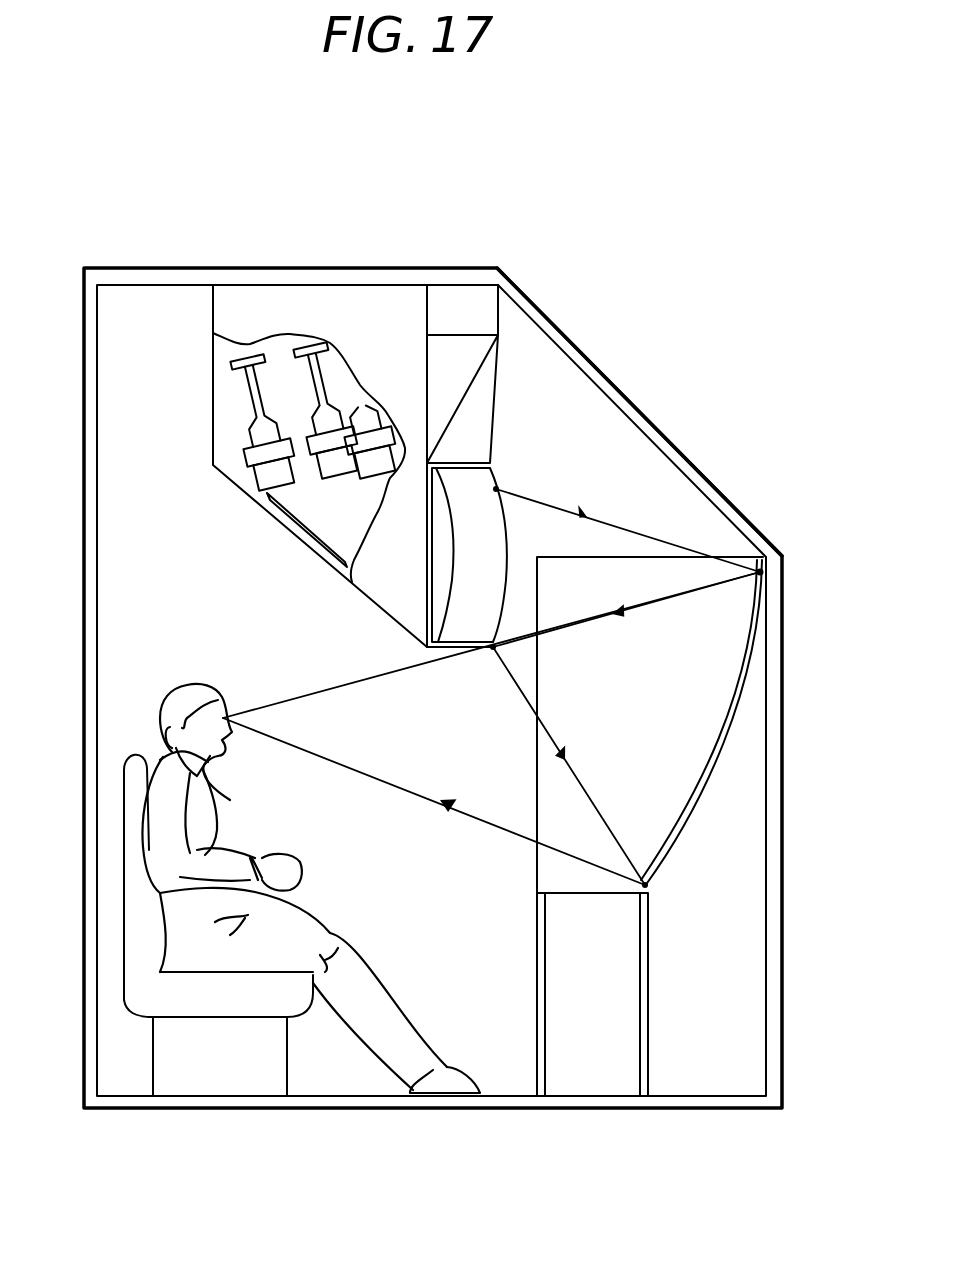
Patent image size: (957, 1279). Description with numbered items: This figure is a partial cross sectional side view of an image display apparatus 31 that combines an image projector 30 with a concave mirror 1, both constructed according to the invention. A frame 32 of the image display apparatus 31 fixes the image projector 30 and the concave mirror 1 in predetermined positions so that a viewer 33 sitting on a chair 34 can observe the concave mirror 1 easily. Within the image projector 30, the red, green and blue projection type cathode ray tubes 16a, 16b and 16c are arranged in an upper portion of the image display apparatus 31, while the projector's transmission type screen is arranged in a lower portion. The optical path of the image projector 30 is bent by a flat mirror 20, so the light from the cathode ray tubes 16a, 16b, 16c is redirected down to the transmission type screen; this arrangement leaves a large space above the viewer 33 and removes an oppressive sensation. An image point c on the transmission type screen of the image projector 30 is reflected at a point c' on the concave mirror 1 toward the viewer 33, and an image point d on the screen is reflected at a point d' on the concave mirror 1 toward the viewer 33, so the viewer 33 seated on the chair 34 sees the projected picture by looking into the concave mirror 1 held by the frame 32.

The concave mirror 1 is at (693, 835).
The red projection type cathode ray tube 16a is at (373, 412).
The green projection type cathode ray tube 16b is at (318, 420).
The blue projection type cathode ray tube 16c is at (260, 440).
The flat mirror 20 is at (287, 515).
The image projector 30 is at (492, 420).
The image display apparatus 31 is at (168, 268).
The frame 32 is at (718, 490).
The viewer 33 is at (165, 690).
The chair 34 is at (123, 873).